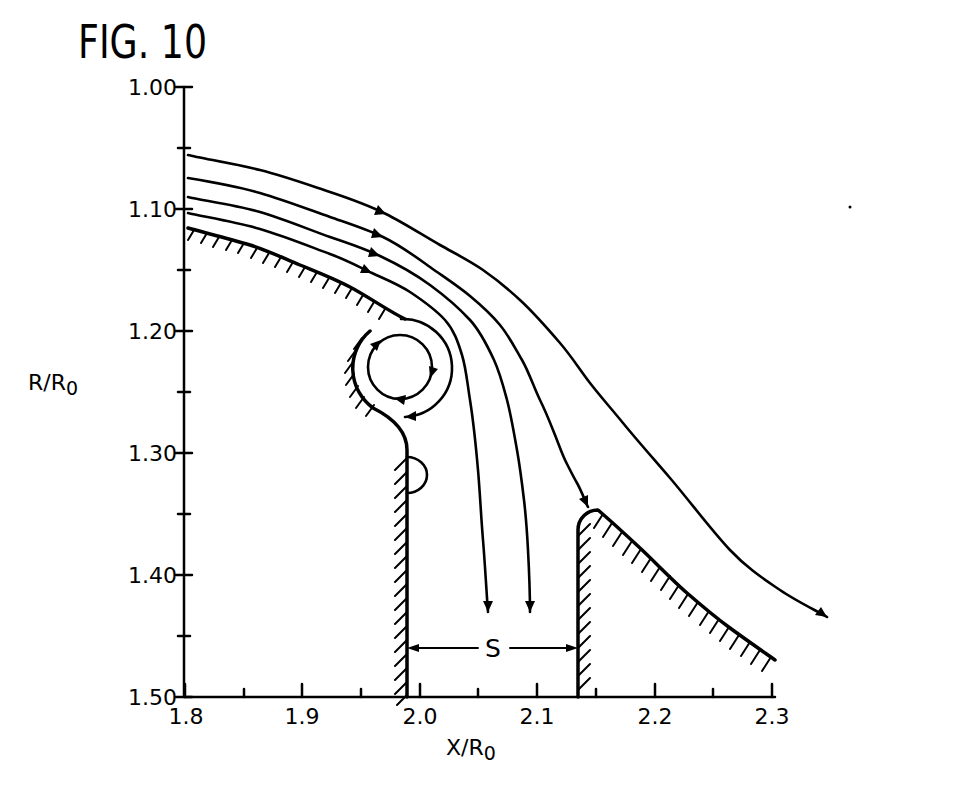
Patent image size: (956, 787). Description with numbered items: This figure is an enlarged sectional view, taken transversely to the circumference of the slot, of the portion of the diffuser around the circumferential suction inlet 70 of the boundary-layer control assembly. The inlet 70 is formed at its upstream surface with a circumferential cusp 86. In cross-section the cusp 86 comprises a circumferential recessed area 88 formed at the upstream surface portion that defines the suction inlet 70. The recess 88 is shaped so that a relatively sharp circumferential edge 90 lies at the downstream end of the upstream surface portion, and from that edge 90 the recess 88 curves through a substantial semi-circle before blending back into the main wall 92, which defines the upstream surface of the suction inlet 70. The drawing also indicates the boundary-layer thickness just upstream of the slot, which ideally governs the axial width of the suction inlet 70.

The circumferential suction inlet 70 is at (556, 527).
The cusp 86 is at (366, 305).
The recessed area 88 is at (388, 358).
The sharp circumferential edge 90 is at (409, 318).
The main wall 92 is at (407, 493).